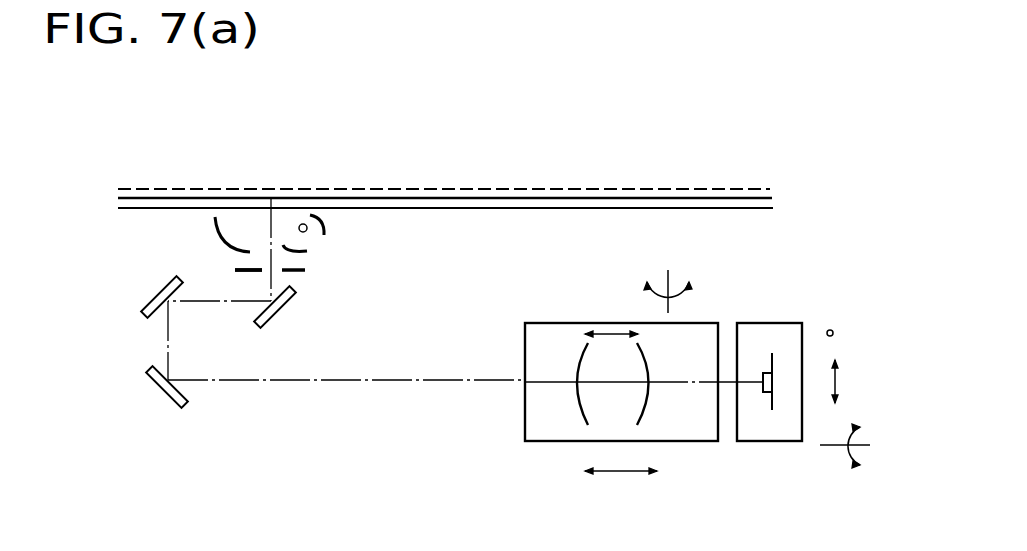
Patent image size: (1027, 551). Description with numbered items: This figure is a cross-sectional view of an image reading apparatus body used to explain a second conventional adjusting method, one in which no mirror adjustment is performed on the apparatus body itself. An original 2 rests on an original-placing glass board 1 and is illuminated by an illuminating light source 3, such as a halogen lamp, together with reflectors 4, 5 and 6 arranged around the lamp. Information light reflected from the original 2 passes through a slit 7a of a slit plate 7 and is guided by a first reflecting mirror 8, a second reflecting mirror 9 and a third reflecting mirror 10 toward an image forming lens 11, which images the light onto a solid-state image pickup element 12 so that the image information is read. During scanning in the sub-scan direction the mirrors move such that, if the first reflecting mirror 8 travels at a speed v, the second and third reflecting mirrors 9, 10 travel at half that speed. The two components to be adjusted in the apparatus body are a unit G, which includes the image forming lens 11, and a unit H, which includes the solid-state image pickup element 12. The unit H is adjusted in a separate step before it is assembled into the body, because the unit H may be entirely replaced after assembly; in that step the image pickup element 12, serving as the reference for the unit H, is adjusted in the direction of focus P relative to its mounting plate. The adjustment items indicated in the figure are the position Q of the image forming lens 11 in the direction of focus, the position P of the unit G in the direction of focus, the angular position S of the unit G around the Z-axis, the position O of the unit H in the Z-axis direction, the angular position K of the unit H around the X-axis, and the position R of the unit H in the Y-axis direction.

The original-placing glass board 1 is at (515, 198).
The original 2 is at (603, 189).
The illuminating light source 3 is at (307, 232).
The reflector 4 is at (311, 216).
The reflector 5 is at (288, 248).
The reflector 6 is at (224, 233).
The slit plate 7 is at (300, 272).
The slit 7a is at (265, 273).
The first reflecting mirror 8 is at (268, 325).
The second reflecting mirror 9 is at (150, 315).
The third reflecting mirror 10 is at (170, 407).
The image forming lens 11 is at (582, 413).
The solid-state image pickup element 12 is at (763, 393).
The unit G is at (558, 323).
The unit H is at (778, 323).
The position of the image forming lens in the direction of focus Q is at (616, 334).
The angular position of unit G around Z-axis S is at (690, 300).
The direction of focus P is at (622, 471).
The position of unit H in the Y-axis direction R is at (832, 330).
The position of unit H in the Z-axis direction O is at (838, 382).
The angular position of unit H around X-axis K is at (837, 468).